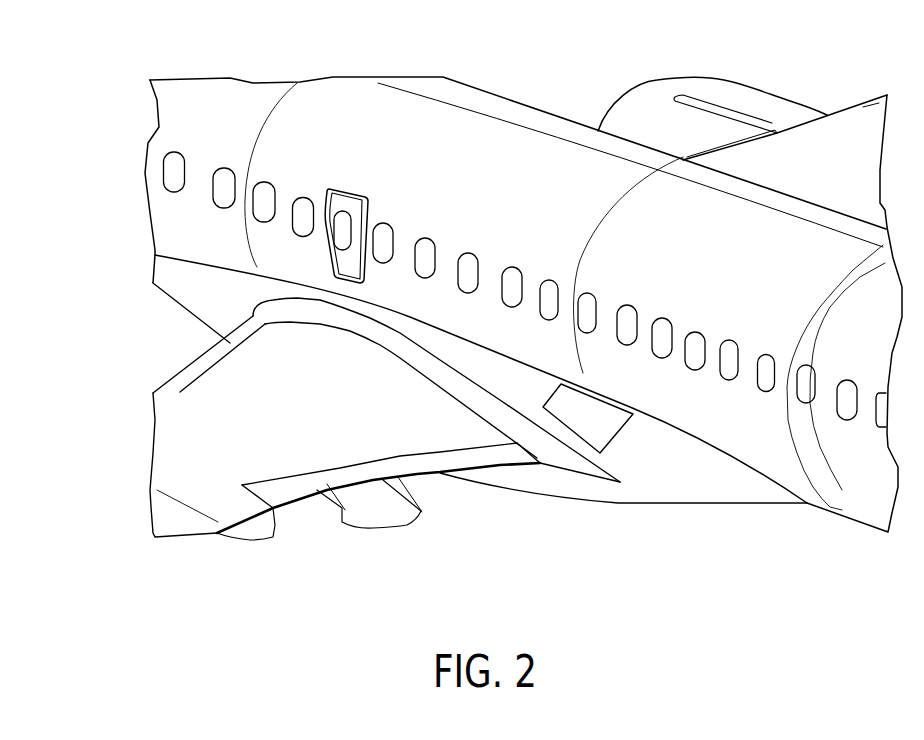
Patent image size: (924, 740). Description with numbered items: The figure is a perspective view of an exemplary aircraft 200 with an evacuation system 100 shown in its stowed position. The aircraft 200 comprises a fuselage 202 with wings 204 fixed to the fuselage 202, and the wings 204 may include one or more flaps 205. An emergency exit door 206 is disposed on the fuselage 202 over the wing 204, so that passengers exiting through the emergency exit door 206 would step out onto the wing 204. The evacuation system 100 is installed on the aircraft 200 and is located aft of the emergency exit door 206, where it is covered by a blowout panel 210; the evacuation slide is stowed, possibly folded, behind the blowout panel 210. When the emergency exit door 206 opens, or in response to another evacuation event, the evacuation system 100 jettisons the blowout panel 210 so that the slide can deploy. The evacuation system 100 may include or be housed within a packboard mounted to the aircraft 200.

The aircraft 200 is at (118, 86).
The fuselage 202 is at (490, 191).
The wings 204 is at (258, 406).
The flaps 205 is at (413, 462).
The emergency exit door 206 is at (333, 186).
The evacuation system 100 is at (555, 394).
The blowout panel 210 is at (603, 435).